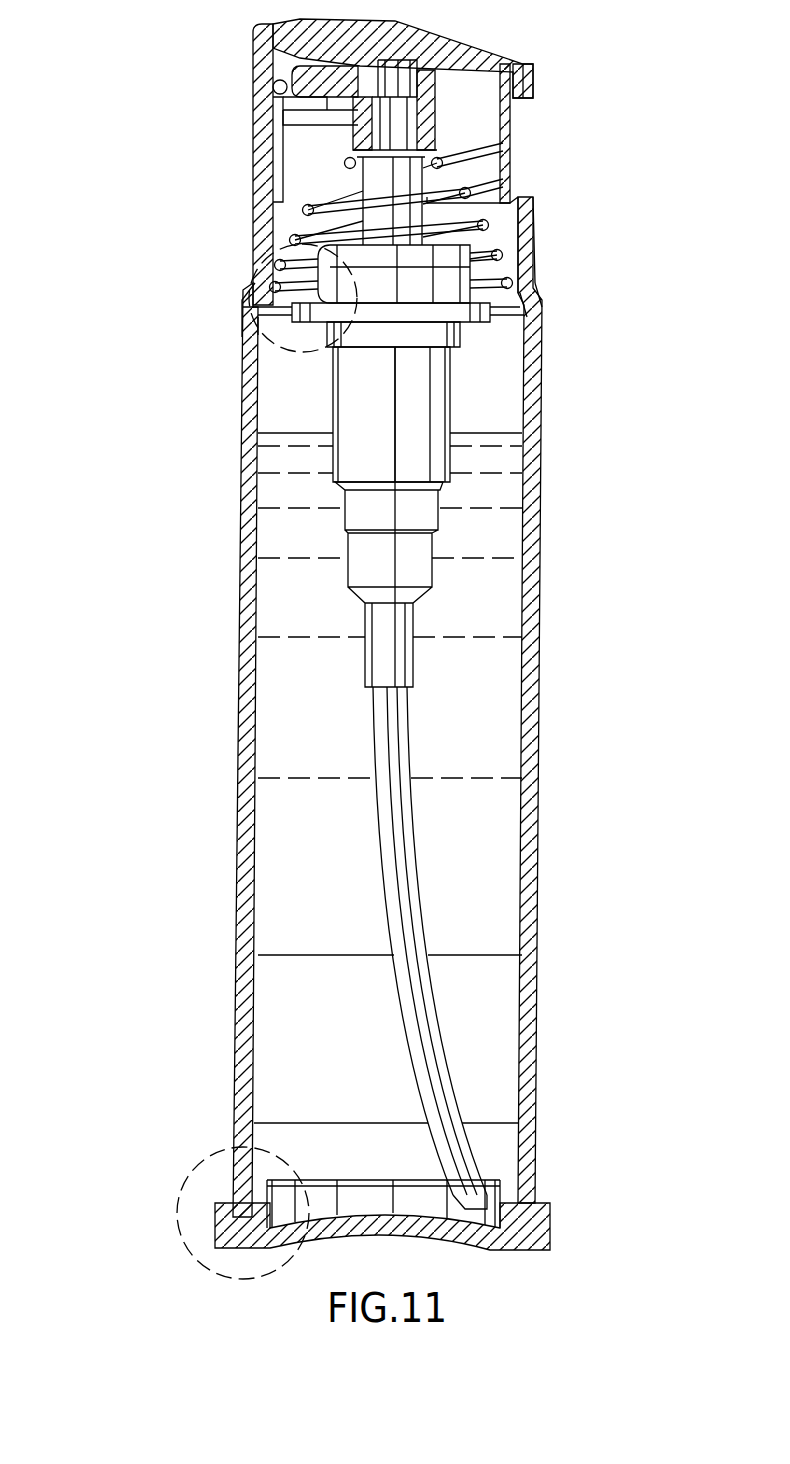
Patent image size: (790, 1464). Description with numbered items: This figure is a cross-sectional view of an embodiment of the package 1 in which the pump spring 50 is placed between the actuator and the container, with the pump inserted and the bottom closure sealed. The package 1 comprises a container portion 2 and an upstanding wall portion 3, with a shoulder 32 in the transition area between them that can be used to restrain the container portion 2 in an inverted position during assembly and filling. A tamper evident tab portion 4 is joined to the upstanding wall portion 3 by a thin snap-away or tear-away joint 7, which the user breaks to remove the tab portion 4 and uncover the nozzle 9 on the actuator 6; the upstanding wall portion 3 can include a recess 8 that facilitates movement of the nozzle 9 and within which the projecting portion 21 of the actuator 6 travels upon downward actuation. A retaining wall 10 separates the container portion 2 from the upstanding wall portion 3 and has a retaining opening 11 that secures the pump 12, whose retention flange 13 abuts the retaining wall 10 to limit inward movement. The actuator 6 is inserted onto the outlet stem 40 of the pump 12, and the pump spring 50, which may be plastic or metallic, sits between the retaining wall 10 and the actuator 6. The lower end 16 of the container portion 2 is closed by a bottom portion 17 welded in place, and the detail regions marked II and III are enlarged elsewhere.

The package 1 is at (578, 666).
The container portion 2 is at (540, 770).
The upstanding wall portion 3 is at (537, 223).
The tamper evident tab portion 4 is at (253, 88).
The actuator 6 is at (539, 62).
The snap-away or tear-away joint 7 is at (253, 193).
The recess 8 is at (530, 125).
The nozzle 9 is at (302, 21).
The retaining wall 10 is at (534, 263).
The retaining opening 11 is at (318, 255).
The pump 12 is at (452, 463).
The retention flange 13 is at (468, 327).
The lower end 16 is at (534, 1197).
The bottom portion 17 is at (552, 1243).
The projecting portion 21 is at (535, 86).
The shoulder 32 is at (540, 294).
The outlet stem 40 is at (405, 165).
The pump spring 50 is at (308, 204).
The section II is at (249, 361).
The section III is at (180, 1243).